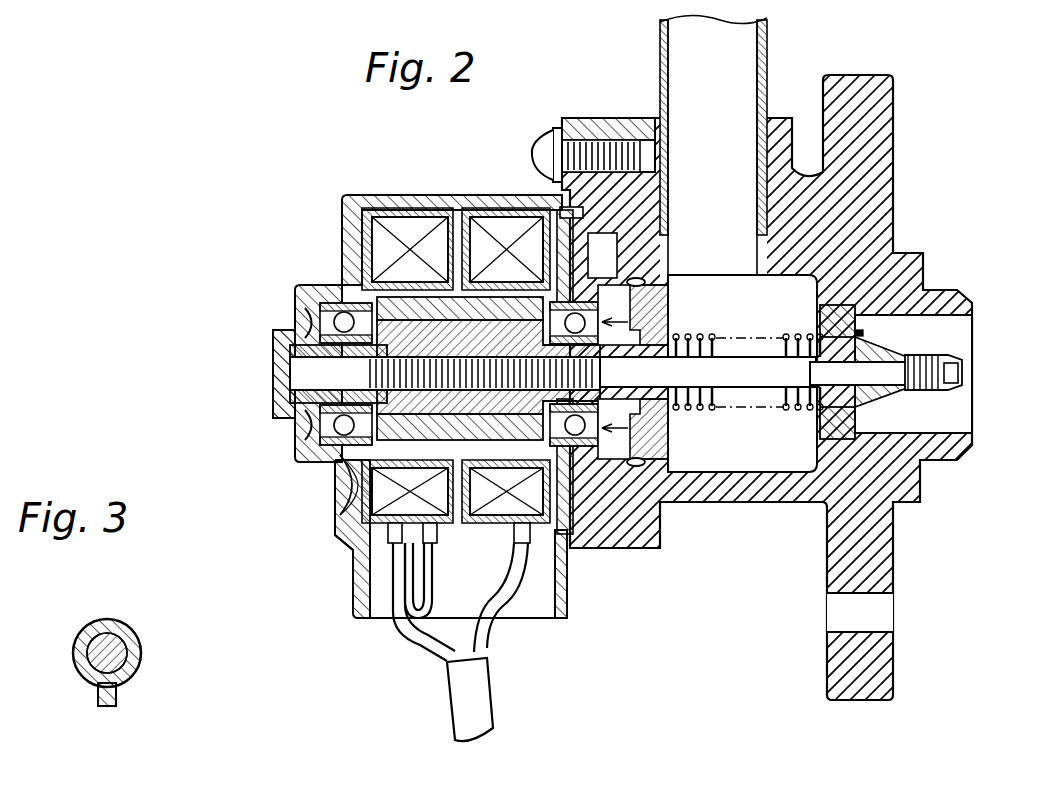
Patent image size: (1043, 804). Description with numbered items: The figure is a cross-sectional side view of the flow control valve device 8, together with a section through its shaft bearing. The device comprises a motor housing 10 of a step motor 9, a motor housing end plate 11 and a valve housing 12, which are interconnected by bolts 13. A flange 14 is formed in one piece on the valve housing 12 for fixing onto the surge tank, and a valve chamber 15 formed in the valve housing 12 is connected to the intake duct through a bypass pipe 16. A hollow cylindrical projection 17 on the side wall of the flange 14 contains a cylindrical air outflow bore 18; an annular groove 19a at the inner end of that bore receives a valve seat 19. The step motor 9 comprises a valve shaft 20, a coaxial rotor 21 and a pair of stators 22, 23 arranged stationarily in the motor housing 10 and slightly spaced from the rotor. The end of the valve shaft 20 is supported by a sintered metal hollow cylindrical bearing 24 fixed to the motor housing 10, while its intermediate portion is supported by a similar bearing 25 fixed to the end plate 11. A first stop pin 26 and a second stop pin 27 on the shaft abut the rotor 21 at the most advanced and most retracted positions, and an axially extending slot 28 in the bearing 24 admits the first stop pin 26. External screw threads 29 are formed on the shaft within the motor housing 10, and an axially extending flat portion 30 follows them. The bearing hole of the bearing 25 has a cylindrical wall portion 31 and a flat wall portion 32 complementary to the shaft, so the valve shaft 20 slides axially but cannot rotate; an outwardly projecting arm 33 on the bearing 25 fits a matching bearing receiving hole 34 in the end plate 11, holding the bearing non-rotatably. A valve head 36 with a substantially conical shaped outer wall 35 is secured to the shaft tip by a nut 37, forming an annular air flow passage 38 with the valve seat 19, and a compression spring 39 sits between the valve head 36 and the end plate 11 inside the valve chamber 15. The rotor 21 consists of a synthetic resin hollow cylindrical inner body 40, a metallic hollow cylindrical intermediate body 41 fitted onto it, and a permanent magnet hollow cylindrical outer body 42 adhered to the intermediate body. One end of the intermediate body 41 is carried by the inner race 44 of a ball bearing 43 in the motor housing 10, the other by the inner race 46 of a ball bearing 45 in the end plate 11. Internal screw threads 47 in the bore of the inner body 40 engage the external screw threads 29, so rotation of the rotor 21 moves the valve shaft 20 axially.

In FIG. 2, the flow control valve device 8 is at (805, 62).
In FIG. 2, the step motor 9 is at (392, 196).
In FIG. 2, the motor housing 10 is at (440, 195).
In FIG. 2, the motor housing end plate 11 is at (608, 130).
In FIG. 2, the valve housing 12 is at (770, 160).
In FIG. 2, the bolts 13 is at (545, 145).
In FIG. 2, the flange 14 is at (866, 82).
In FIG. 2, the valve chamber 15 is at (756, 314).
In FIG. 2, the bypass pipe 16 is at (660, 42).
In FIG. 2, the hollow cylindrical projection 17 is at (935, 295).
In FIG. 2, the cylindrical air outflow bore 18 is at (955, 325).
In FIG. 2, the valve seat 19 is at (822, 318).
In FIG. 2, the annular groove 19a is at (820, 310).
In FIG. 2, the valve shaft 20 is at (705, 377).
In FIG. 3, the valve shaft 20 is at (135, 680).
In FIG. 2, the rotor 21 is at (385, 310).
In FIG. 2, the stator 22 is at (390, 240).
In FIG. 2, the stator 23 is at (494, 225).
In FIG. 2, the hollow cylindrical bearing 24 is at (298, 352).
In FIG. 2, the hollow cylindrical bearing 25 is at (658, 335).
In FIG. 3, the hollow cylindrical bearing 25 is at (80, 638).
In FIG. 2, the first stop pin 26 is at (295, 415).
In FIG. 2, the second stop pin 27 is at (660, 420).
In FIG. 2, the axially extending slot 28 is at (298, 396).
In FIG. 2, the external screw threads 29 is at (560, 460).
In FIG. 2, the axially extending flat portion 30 is at (738, 362).
In FIG. 3, the axially extending flat portion 30 is at (128, 628).
In FIG. 3, the cylindrical wall portion 31 is at (85, 673).
In FIG. 3, the flat wall portion 32 is at (104, 623).
In FIG. 3, the outwardly projecting arm 33 is at (118, 700).
In FIG. 2, the bearing receiving hole 34 is at (680, 480).
In FIG. 2, the conical shaped outer wall 35 is at (865, 400).
In FIG. 2, the valve head 36 is at (930, 352).
In FIG. 2, the nut 37 is at (960, 392).
In FIG. 2, the annular air flow passage 38 is at (860, 332).
In FIG. 2, the compression spring 39 is at (800, 412).
In FIG. 2, the hollow cylindrical inner body 40 is at (338, 458).
In FIG. 2, the hollow cylindrical intermediate body 41 is at (350, 500).
In FIG. 2, the hollow cylindrical outer body 42 is at (352, 548).
In FIG. 2, the ball bearing 43 is at (325, 305).
In FIG. 2, the inner race 44 is at (303, 330).
In FIG. 2, the ball bearing 45 is at (600, 300).
In FIG. 2, the inner race 46 is at (528, 335).
In FIG. 2, the internal screw threads 47 is at (370, 370).